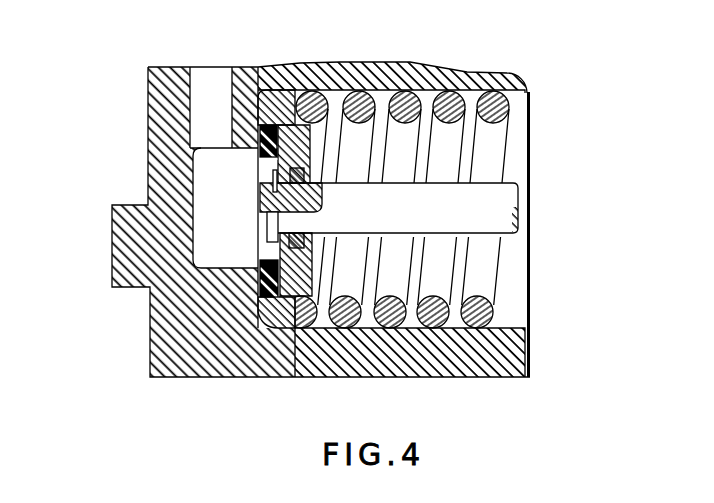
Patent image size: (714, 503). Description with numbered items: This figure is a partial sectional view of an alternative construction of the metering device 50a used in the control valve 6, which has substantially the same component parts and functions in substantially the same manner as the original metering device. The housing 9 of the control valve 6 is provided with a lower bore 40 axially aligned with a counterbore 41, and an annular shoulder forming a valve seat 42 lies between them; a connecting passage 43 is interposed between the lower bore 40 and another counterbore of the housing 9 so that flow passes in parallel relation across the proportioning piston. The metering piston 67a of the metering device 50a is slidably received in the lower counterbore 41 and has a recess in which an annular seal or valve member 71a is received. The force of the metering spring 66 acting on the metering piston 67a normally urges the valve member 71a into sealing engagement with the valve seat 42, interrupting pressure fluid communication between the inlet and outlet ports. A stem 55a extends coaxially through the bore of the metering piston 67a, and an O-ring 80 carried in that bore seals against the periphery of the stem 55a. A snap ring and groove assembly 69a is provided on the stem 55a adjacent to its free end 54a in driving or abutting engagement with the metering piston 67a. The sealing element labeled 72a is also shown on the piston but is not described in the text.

The control valve 6 is at (128, 126).
The housing 9 is at (163, 334).
The lower bore 40 is at (208, 158).
The counterbore 41 is at (503, 327).
The valve seat 42 is at (257, 303).
The connecting passage 43 is at (197, 131).
The metering device 50a is at (545, 313).
The free end 54a is at (261, 222).
The stem 55a is at (482, 188).
The metering spring 66 is at (500, 131).
The metering piston 67a is at (288, 322).
The snap ring and groove assembly 69a is at (260, 168).
The valve member 71a is at (270, 125).
The lower seal ring 72a is at (262, 254).
The O-ring 80 is at (296, 233).